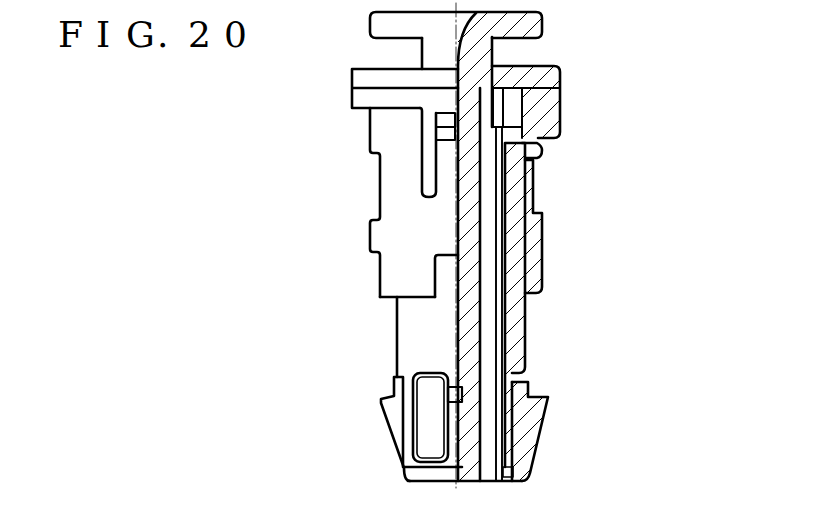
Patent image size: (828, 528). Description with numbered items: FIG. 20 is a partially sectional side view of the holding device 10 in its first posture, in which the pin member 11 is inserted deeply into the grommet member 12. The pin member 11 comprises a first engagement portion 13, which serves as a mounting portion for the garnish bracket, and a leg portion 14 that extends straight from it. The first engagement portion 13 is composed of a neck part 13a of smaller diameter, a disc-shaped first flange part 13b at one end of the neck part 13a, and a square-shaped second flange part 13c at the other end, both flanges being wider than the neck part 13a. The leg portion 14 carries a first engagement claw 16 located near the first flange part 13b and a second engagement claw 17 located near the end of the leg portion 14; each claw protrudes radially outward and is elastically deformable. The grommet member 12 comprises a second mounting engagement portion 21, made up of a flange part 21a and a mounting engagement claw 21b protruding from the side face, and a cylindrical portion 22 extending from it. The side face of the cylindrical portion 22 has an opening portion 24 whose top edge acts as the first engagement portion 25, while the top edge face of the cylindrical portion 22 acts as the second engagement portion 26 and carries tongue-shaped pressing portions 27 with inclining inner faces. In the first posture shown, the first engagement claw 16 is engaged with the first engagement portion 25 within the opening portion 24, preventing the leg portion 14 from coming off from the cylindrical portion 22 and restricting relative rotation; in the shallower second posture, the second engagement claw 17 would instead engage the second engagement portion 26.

The holding device 10 is at (616, 112).
The pin member 11 is at (398, 336).
The leg portion 14 is at (407, 284).
The grommet member 12 is at (400, 185).
The cylindrical portion 22 is at (414, 260).
The first engagement portion 13 is at (487, 51).
The neck part 13a is at (414, 260).
The first flange part 13b is at (558, 76).
The second flange part 13c is at (543, 18).
The first engagement claw 16 is at (536, 178).
The second engagement claw 17 is at (382, 403).
The second mounting engagement portion 21 is at (353, 97).
The flange part 21a is at (345, 103).
The mounting engagement claw 21b is at (437, 120).
The opening portion 24 is at (534, 203).
The first engagement portion 25 is at (541, 155).
The second engagement portion 26 is at (437, 259).
The pressing portion 27 is at (392, 294).